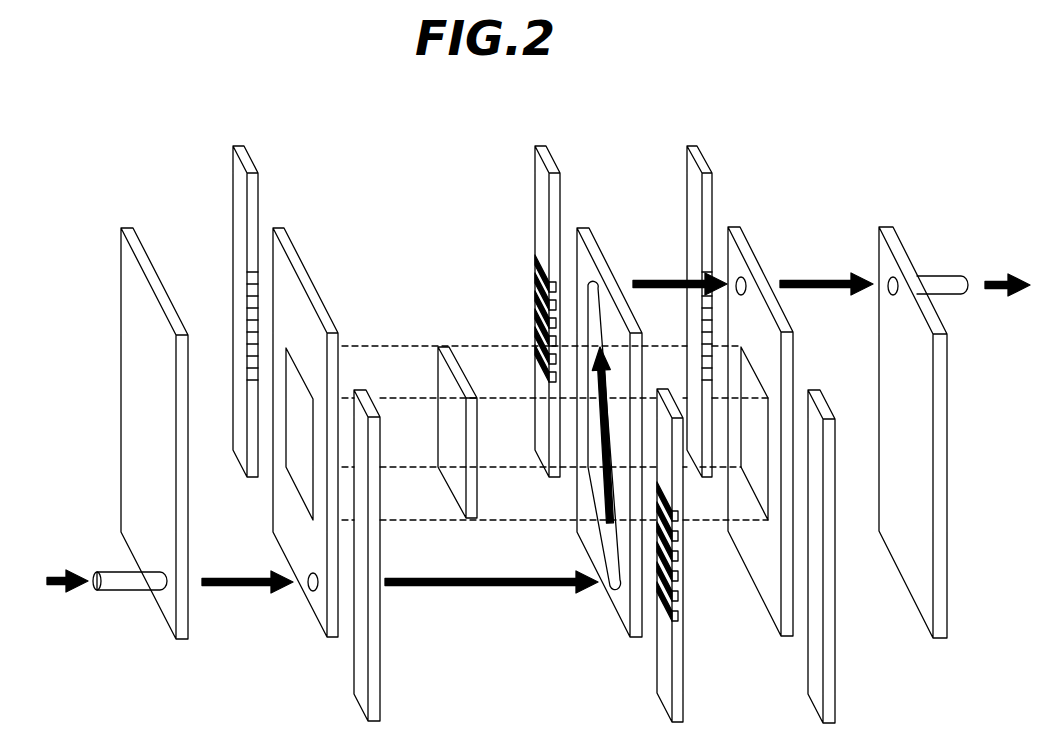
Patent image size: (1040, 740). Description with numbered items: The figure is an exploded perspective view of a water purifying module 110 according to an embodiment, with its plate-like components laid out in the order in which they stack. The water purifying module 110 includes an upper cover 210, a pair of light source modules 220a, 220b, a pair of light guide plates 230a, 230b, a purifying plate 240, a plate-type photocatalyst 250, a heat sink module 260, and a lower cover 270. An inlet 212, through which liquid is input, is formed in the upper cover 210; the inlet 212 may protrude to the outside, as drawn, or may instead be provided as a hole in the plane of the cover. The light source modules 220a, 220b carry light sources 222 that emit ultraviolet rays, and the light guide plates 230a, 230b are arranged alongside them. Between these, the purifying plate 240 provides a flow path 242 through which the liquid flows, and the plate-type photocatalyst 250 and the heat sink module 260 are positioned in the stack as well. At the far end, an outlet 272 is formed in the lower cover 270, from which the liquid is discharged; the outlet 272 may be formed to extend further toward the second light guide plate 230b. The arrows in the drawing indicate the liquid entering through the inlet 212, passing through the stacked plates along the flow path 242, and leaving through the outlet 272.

The water purifying module 110 is at (108, 96).
The upper cover 210 is at (130, 357).
The inlet 212 is at (142, 583).
The light source module 220a is at (232, 164).
The light sources 222 is at (247, 273).
The light guide plate 230a is at (303, 273).
The plate-type photocatalyst 250 is at (451, 347).
The heat sink module 260 is at (535, 173).
The purifying plate 240 is at (577, 464).
The flow path 242 is at (608, 547).
The light source module 220b is at (684, 175).
The second light guide plate 230b is at (748, 250).
The lower cover 270 is at (923, 590).
The outlet 272 is at (934, 283).